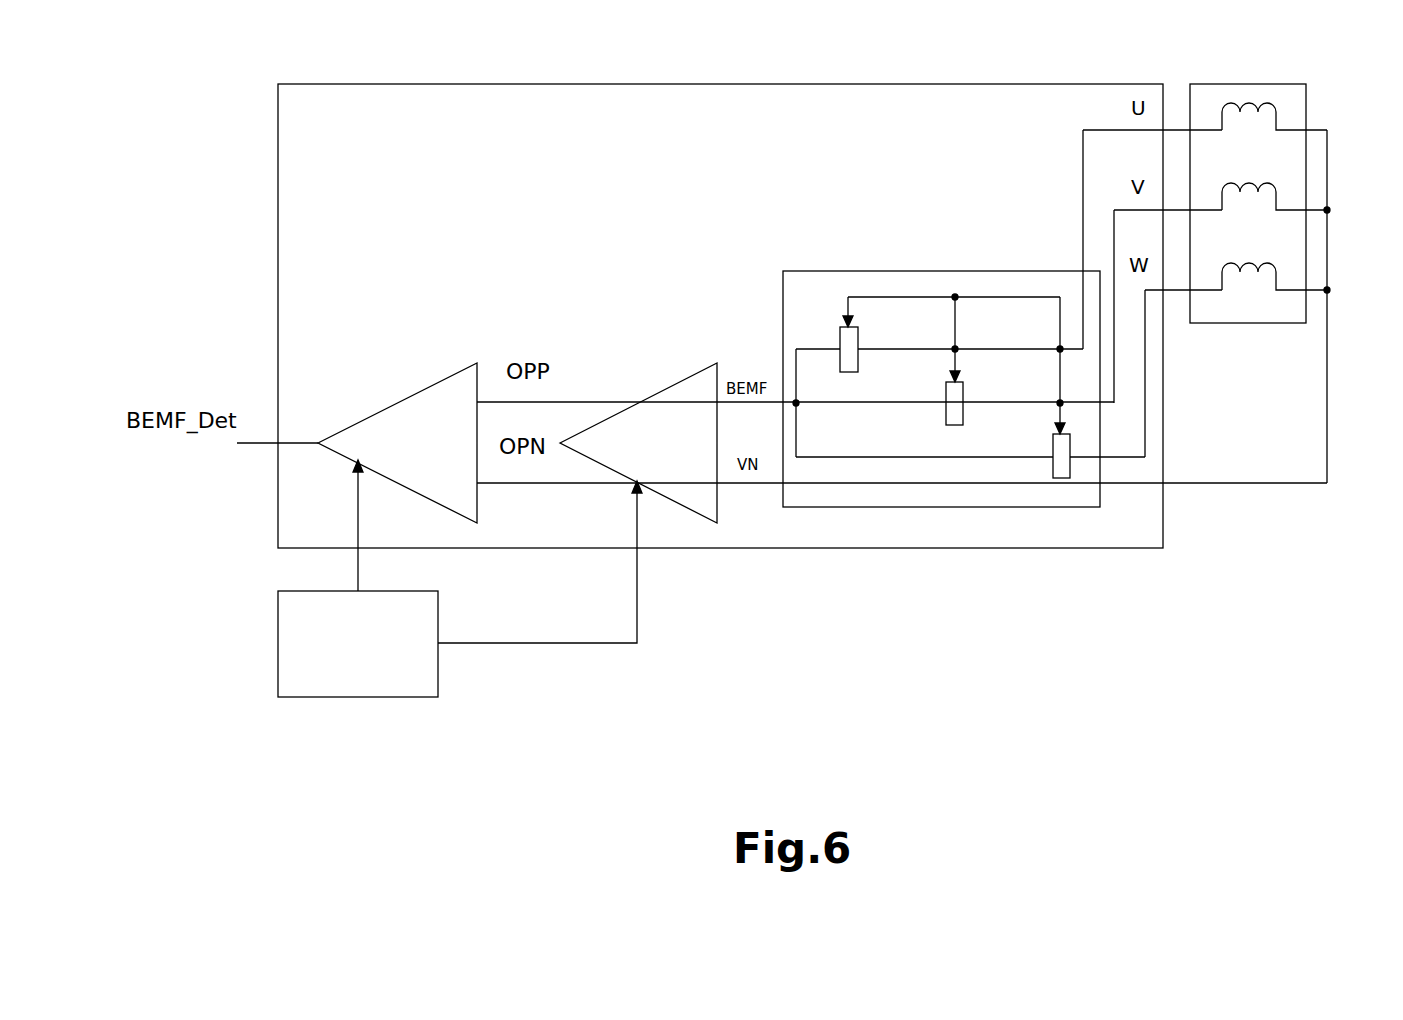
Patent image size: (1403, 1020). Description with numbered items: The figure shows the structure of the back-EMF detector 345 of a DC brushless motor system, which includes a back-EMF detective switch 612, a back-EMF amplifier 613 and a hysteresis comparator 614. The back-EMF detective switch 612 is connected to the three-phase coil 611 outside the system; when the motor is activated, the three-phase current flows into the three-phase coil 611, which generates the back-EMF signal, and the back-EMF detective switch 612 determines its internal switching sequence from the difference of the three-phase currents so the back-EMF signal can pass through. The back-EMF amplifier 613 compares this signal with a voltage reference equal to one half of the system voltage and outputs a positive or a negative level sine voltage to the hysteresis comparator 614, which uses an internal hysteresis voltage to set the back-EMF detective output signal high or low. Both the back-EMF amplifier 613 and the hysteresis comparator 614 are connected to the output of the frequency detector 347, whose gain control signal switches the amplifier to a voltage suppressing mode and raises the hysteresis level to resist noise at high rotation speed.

The BEMF detector 345 is at (366, 154).
The frequency detector 347 is at (460, 605).
The three-phase coil 611 is at (1230, 251).
The BEMF detective switch 612 is at (930, 270).
The BEMF amplifier 613 is at (672, 383).
The hysteresis comparator 614 is at (435, 383).